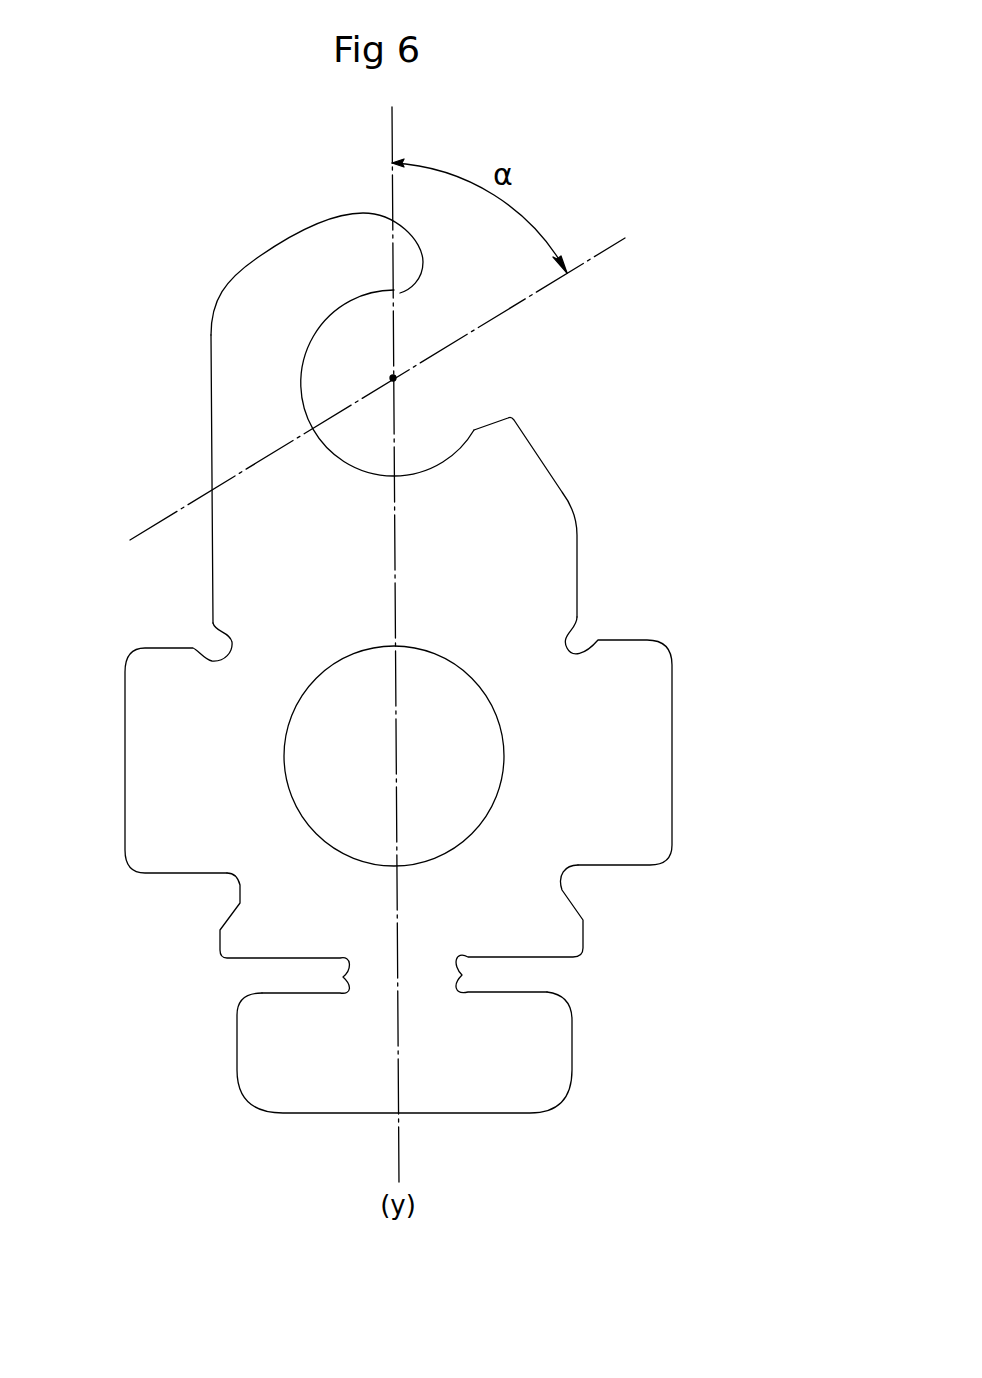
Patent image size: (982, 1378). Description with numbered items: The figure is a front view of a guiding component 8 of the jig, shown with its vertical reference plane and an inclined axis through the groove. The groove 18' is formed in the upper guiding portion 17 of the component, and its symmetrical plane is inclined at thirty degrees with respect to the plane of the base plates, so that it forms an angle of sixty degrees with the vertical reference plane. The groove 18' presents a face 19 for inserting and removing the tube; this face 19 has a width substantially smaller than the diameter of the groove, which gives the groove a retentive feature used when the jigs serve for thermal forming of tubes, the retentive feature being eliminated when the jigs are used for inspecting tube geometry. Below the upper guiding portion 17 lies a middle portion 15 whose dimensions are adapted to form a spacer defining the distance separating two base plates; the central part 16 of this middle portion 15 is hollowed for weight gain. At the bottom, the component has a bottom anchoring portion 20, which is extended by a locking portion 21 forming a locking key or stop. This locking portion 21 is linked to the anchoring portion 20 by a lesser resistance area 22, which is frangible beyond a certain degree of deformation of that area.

The guiding component 8 is at (706, 861).
The middle portion 15 is at (655, 718).
The central part 16 is at (465, 700).
The upper guiding portion 17 is at (560, 493).
The groove 18' is at (445, 383).
The face 19 is at (401, 292).
The bottom anchoring portion 20 is at (267, 915).
The locking portion 21 is at (533, 1060).
The lesser resistance area 22 is at (443, 975).